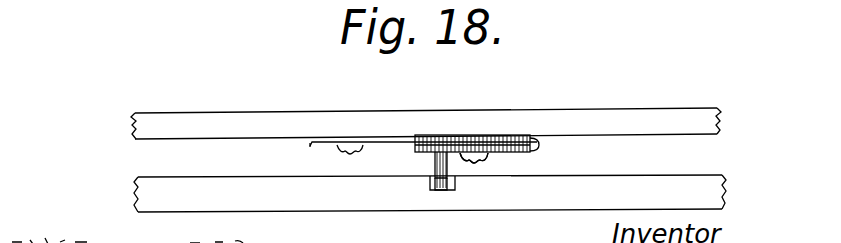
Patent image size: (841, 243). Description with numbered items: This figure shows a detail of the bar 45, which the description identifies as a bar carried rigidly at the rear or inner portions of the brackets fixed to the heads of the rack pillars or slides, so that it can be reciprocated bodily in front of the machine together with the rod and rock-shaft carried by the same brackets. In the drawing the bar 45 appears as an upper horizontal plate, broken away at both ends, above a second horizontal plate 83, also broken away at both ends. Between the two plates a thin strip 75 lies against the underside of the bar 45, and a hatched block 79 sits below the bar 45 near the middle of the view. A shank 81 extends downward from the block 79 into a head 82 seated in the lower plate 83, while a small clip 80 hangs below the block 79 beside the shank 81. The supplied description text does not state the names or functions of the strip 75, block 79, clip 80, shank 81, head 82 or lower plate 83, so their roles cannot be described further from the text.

The bar 45 is at (240, 117).
The strip 75 is at (312, 143).
The threaded block 79 is at (540, 155).
The clip 80 is at (488, 155).
The bolt shank 81 is at (435, 158).
The bolt head 82 is at (447, 192).
The lower plate 83 is at (430, 193).